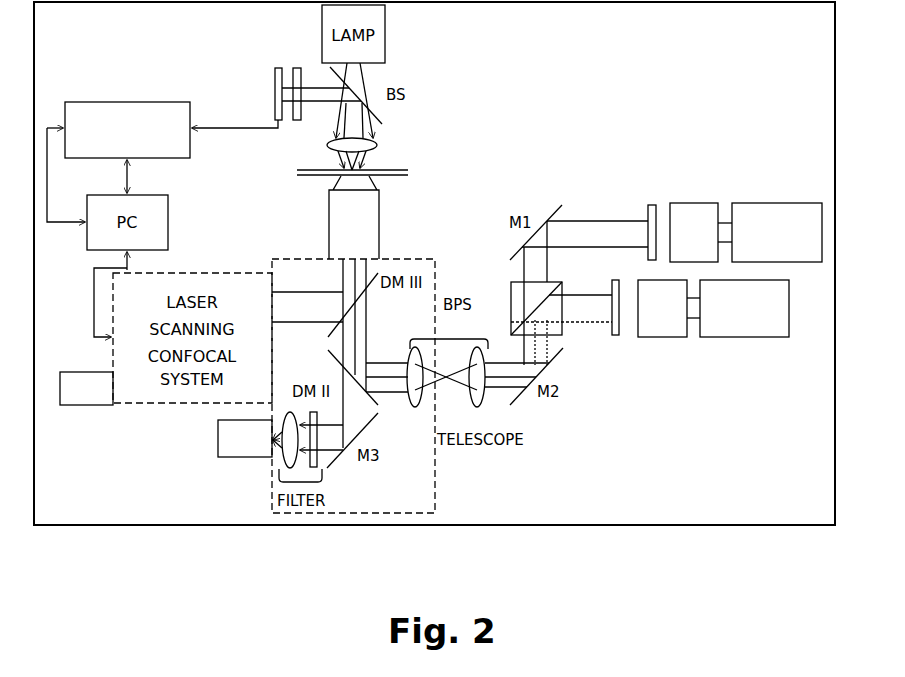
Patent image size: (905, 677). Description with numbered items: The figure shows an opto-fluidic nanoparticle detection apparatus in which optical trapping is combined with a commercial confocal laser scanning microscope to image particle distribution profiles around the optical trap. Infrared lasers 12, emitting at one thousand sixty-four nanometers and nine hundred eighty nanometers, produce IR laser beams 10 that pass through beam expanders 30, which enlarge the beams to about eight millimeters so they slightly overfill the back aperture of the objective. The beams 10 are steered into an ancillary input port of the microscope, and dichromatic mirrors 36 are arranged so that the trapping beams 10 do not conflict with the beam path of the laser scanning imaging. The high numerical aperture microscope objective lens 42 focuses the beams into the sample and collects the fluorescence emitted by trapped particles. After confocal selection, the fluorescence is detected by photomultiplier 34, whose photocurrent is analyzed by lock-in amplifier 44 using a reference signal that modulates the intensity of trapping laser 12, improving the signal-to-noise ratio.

The IR laser beam 10 is at (598, 217).
The IR laser 12 is at (778, 203).
The beam expander 30 is at (450, 338).
The photomultiplier 34 is at (230, 85).
The dichromatic mirror 36 is at (374, 288).
The microscope objective lens 42 is at (382, 218).
The lock-in amplifier 44 is at (107, 101).